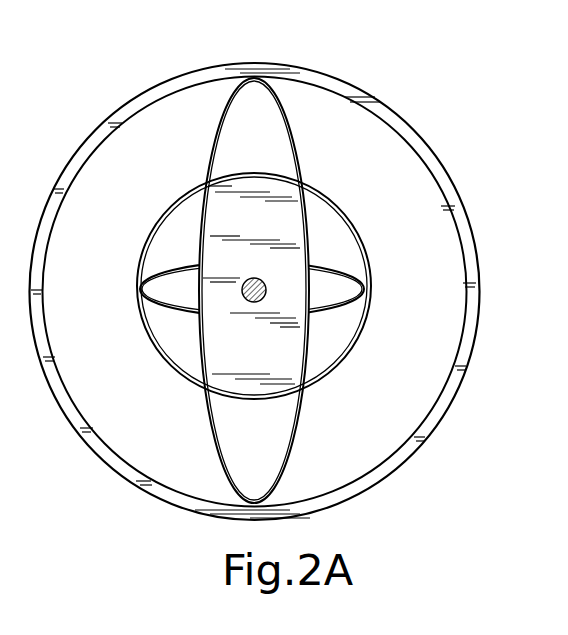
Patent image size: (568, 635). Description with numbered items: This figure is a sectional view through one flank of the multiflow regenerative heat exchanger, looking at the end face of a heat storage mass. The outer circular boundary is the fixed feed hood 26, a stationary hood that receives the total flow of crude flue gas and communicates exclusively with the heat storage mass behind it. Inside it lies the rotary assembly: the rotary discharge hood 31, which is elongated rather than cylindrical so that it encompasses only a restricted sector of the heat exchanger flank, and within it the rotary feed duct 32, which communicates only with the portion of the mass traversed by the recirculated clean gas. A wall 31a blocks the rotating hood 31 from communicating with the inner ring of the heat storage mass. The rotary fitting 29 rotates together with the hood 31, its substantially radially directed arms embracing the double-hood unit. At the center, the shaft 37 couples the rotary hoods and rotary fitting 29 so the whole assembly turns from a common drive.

The fixed feed hood 26 is at (433, 185).
The rotary fitting 29 is at (365, 329).
The rotary discharge hood 31 is at (278, 116).
The wall 31a is at (322, 365).
The rotary feed duct 32 is at (329, 266).
The shaft 37 is at (257, 304).